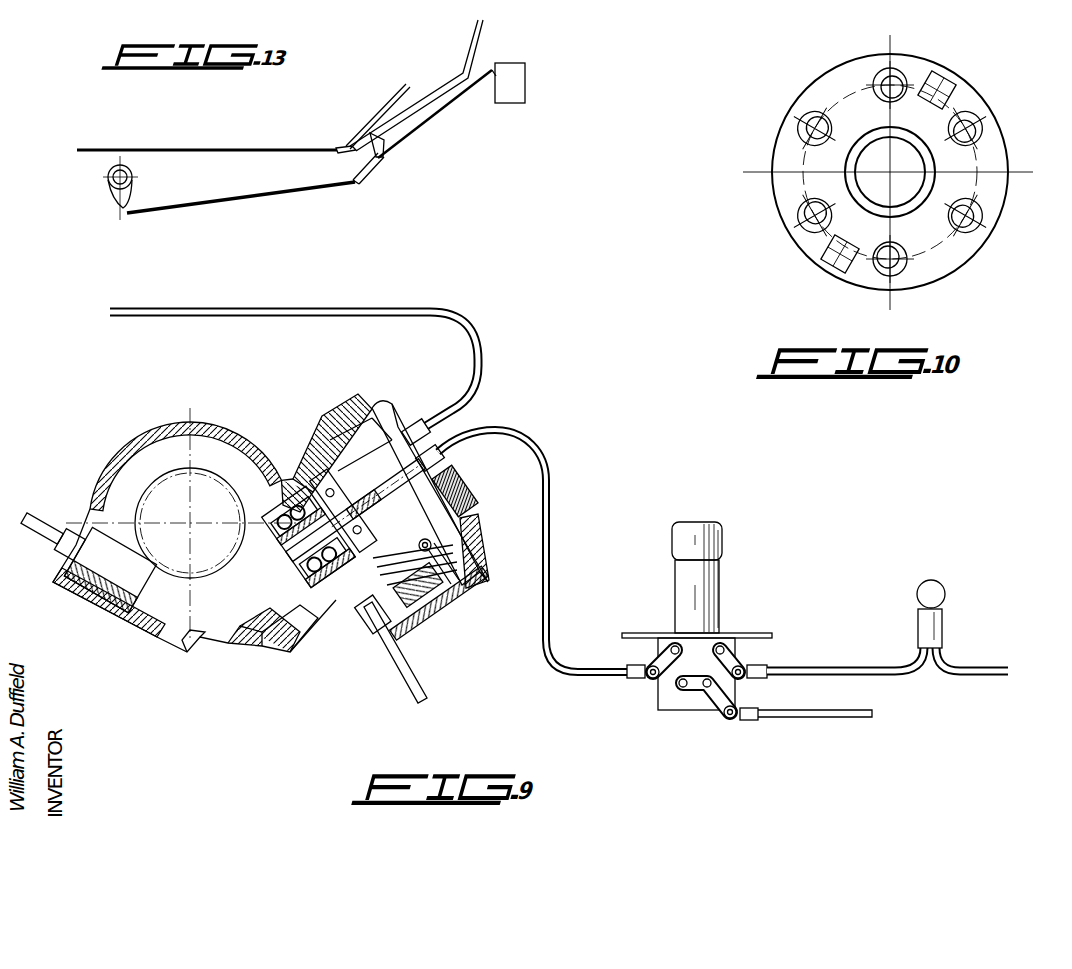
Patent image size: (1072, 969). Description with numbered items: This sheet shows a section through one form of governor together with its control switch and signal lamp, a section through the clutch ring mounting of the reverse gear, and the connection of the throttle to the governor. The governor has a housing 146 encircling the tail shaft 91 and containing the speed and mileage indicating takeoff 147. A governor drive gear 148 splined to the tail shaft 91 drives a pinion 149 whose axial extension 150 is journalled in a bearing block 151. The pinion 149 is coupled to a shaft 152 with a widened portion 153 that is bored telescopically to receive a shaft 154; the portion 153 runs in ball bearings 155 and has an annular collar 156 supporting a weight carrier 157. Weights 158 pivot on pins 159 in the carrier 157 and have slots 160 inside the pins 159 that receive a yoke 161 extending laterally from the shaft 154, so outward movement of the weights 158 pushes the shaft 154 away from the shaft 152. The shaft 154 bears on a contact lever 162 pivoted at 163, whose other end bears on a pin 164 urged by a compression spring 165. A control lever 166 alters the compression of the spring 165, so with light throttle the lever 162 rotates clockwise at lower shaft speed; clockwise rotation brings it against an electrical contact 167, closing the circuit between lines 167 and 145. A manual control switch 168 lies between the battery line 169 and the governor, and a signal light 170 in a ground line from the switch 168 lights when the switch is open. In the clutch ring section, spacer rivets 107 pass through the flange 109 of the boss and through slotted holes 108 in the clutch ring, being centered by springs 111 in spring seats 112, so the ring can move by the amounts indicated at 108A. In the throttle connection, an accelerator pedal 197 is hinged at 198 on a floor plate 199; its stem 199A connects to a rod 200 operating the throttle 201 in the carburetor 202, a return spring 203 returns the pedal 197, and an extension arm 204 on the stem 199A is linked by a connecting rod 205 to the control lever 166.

In FIG. 9, the tail shaft 91 is at (155, 488).
In FIG. 9, the electrical line 145 is at (240, 312).
In FIG. 9, the governor housing 146 is at (186, 422).
In FIG. 9, the speed and mileage indicating takeoff 147 is at (78, 578).
In FIG. 9, the governor drive gear 148 is at (218, 468).
In FIG. 9, the pinion 149 is at (240, 636).
In FIG. 9, the axial extension 150 is at (192, 652).
In FIG. 9, the bearing block 151 is at (152, 648).
In FIG. 9, the shaft 152 is at (292, 630).
In FIG. 9, the widened portion 153 is at (309, 536).
In FIG. 9, the shaft 154 is at (386, 410).
In FIG. 9, the ball bearings 155 is at (307, 538).
In FIG. 9, the annular collar 156 is at (343, 510).
In FIG. 9, the weight carrier 157 is at (316, 462).
In FIG. 9, the weights 158 is at (345, 463).
In FIG. 9, the pins 159 is at (336, 478).
In FIG. 9, the slots 160 is at (376, 450).
In FIG. 9, the yoke 161 is at (472, 497).
In FIG. 9, the contact lever 162 is at (356, 510).
In FIG. 9, the pivot 163 is at (432, 545).
In FIG. 9, the pin 164 is at (439, 603).
In FIG. 9, the compression spring 165 is at (425, 615).
In FIG. 13, the control lever 166 is at (127, 200).
In FIG. 9, the control lever 166 is at (410, 686).
In FIG. 9, the electrical contact 167 is at (548, 575).
In FIG. 9, the manual control switch 168 is at (712, 600).
In FIG. 9, the battery line 169 is at (805, 714).
In FIG. 9, the signal light 170 is at (922, 632).
In FIG. 10, the spacer rivets 107 is at (965, 100).
In FIG. 10, the slotted holes 108 is at (978, 138).
In FIG. 10, the amount of movement 108A is at (812, 120).
In FIG. 10, the flange 109 is at (952, 245).
In FIG. 10, the springs 111 is at (822, 262).
In FIG. 10, the spring seats 112 is at (838, 272).
In FIG. 13, the accelerator pedal 197 is at (378, 112).
In FIG. 13, the hinge 198 is at (348, 146).
In FIG. 13, the floor plate 199 is at (222, 148).
In FIG. 13, the stem 199A is at (386, 150).
In FIG. 13, the rod 200 is at (442, 103).
In FIG. 13, the throttle 201 is at (497, 98).
In FIG. 13, the carburetor 202 is at (512, 102).
In FIG. 13, the return spring 203 is at (403, 96).
In FIG. 13, the extension arm 204 is at (372, 182).
In FIG. 13, the connecting rod 205 is at (232, 200).